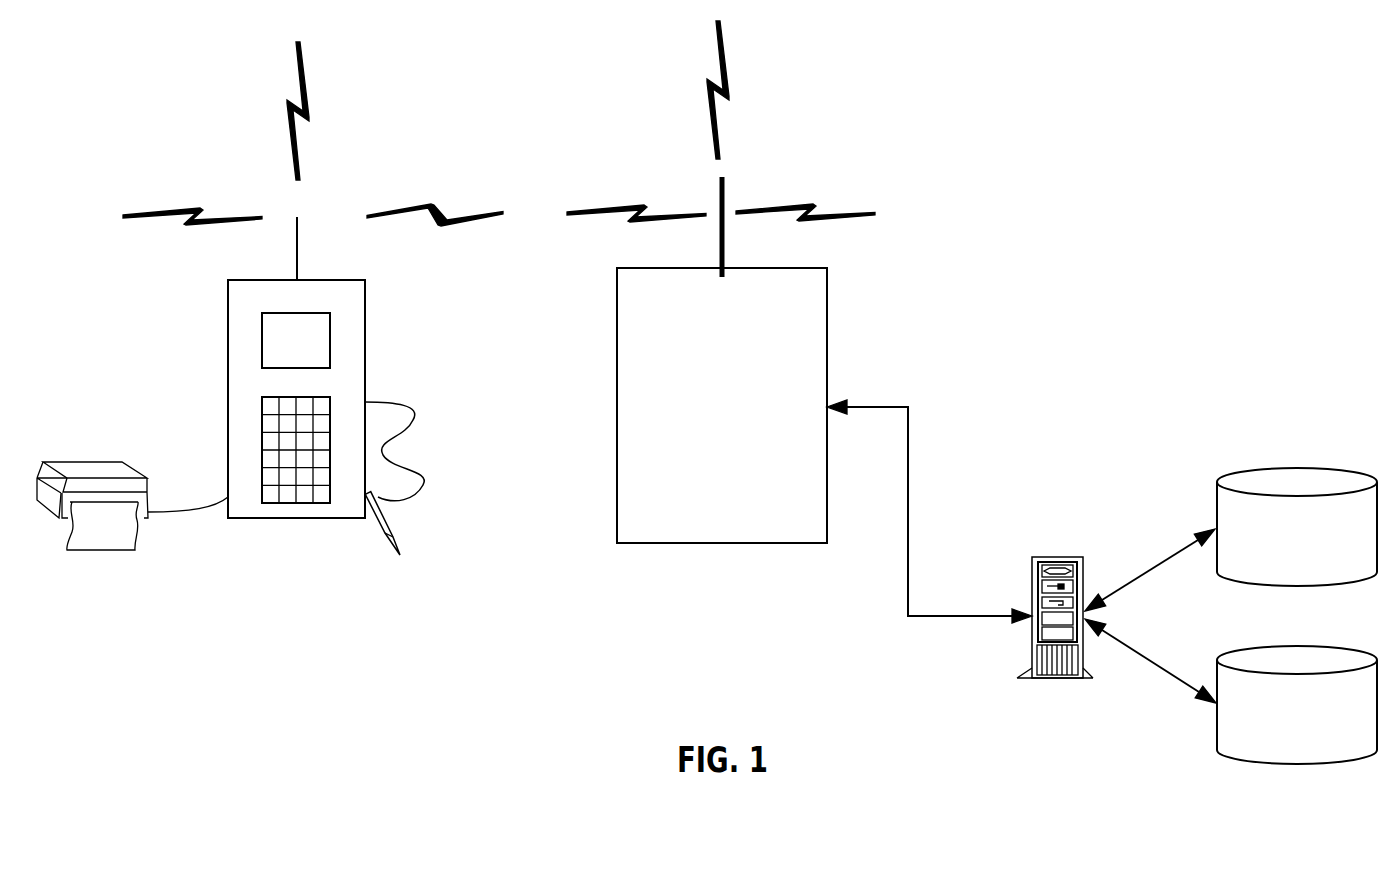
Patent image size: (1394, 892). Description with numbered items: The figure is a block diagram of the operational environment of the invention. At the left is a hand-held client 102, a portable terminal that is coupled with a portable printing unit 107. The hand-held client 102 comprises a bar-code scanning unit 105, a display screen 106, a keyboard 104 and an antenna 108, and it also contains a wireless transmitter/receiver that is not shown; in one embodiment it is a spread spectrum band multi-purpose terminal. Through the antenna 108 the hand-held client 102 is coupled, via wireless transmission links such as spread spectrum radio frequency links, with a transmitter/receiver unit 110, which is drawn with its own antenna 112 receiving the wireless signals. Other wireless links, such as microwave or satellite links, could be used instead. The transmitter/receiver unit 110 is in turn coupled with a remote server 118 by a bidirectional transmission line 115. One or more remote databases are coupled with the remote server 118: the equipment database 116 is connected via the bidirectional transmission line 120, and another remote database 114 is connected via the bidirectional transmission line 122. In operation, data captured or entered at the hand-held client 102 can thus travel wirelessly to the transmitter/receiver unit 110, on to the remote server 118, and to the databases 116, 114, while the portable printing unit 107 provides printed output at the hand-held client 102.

The hand-held client 102 is at (366, 300).
The keyboard 104 is at (262, 452).
The bar-code scanning unit 105 is at (397, 533).
The display screen 106 is at (262, 337).
The portable printing unit 107 is at (70, 460).
The antenna 108 is at (300, 233).
The transmitter/receiver unit 110 is at (829, 290).
The antenna of transmitter/receiver 112 is at (725, 203).
The remote databases 114 is at (1317, 645).
The communication link 115 is at (910, 432).
The equipment database 116 is at (1318, 467).
The remote server 118 is at (1052, 557).
The bidirectional transmission line 120 is at (1153, 565).
The bidirectional transmission line 122 is at (1145, 653).